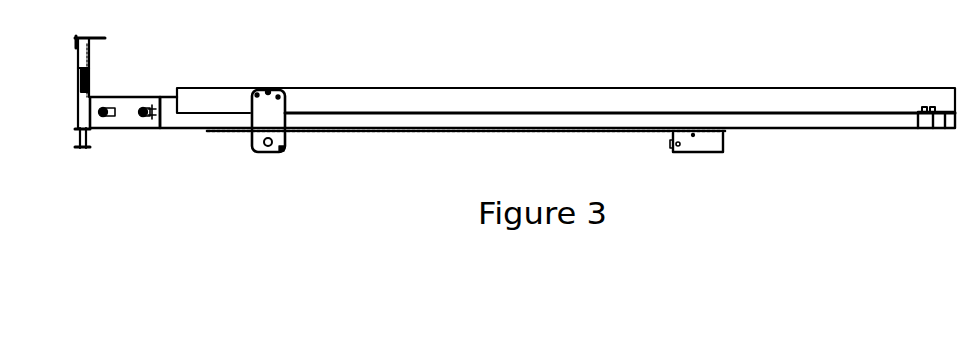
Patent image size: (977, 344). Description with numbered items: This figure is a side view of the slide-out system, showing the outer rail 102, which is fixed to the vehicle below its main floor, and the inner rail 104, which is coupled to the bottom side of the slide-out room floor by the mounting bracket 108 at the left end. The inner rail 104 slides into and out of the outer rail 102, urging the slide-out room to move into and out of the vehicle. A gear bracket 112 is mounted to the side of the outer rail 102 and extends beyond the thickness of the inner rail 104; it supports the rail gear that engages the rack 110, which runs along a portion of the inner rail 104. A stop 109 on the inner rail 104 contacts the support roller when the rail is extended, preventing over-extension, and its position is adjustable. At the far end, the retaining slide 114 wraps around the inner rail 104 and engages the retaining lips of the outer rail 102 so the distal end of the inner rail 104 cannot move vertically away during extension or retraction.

The outer rail 102 is at (393, 88).
The inner rail 104 is at (188, 123).
The mounting bracket 108 is at (92, 92).
The stop 109 is at (712, 152).
The rack 110 is at (226, 134).
The gear bracket 112 is at (278, 90).
The retaining slide 114 is at (925, 123).